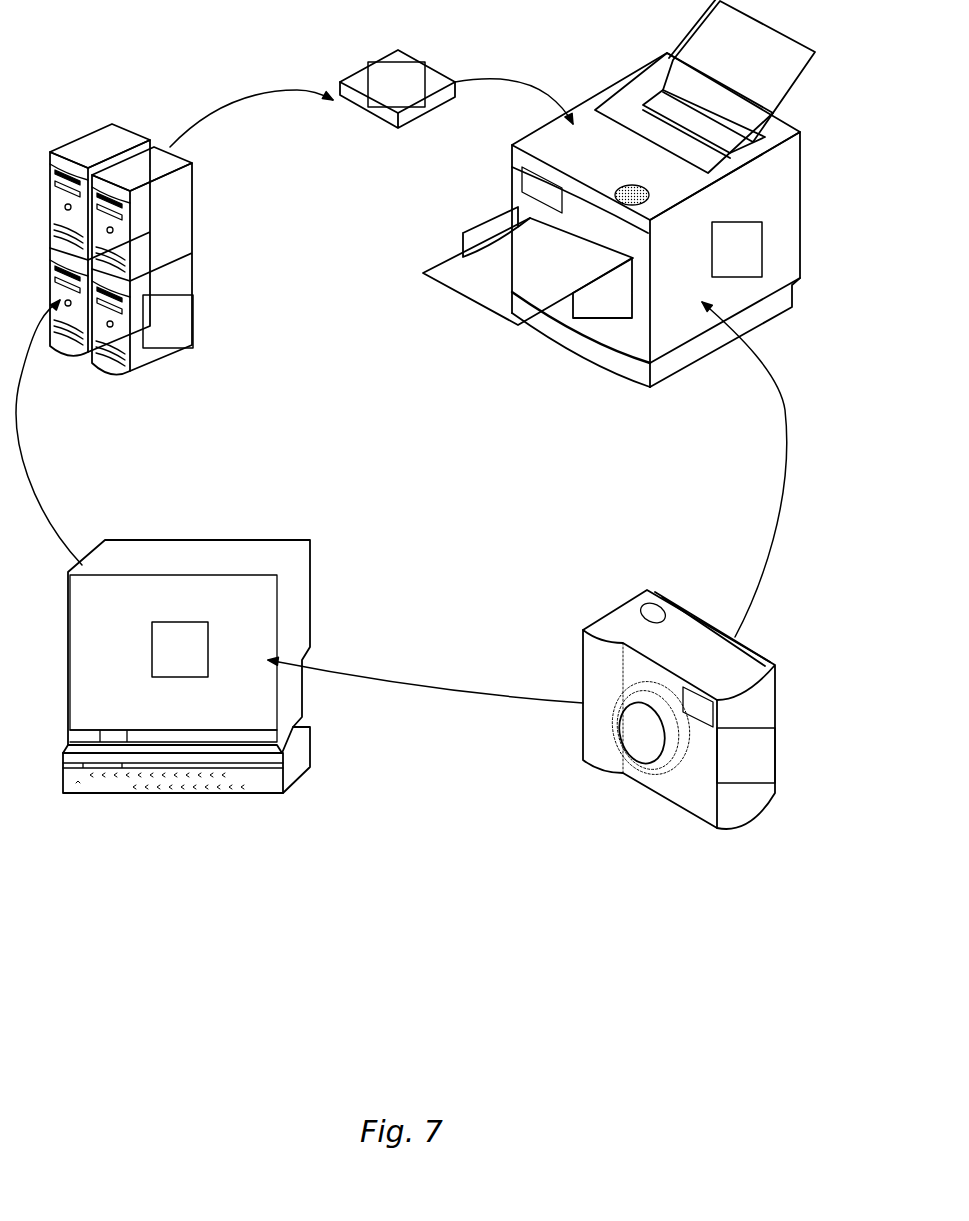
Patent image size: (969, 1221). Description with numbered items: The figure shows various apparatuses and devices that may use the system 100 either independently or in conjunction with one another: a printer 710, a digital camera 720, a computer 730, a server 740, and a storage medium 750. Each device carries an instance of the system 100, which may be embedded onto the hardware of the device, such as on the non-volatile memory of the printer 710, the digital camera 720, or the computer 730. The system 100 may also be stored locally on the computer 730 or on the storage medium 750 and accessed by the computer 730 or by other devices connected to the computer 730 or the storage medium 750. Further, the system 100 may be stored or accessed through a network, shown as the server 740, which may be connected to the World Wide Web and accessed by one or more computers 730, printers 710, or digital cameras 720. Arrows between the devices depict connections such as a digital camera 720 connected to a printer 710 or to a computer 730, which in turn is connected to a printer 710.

The system 100 is at (764, 769).
The printer 710 is at (585, 105).
The digital camera 720 is at (740, 640).
The computer 730 is at (242, 553).
The server 740 is at (72, 142).
The storage medium 750 is at (405, 50).